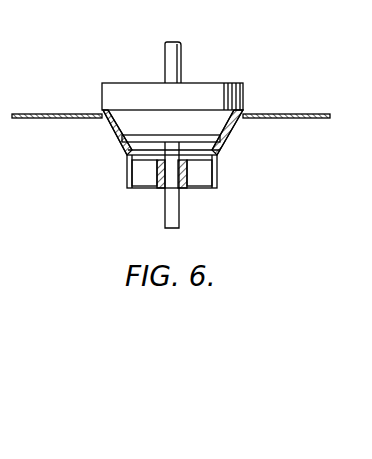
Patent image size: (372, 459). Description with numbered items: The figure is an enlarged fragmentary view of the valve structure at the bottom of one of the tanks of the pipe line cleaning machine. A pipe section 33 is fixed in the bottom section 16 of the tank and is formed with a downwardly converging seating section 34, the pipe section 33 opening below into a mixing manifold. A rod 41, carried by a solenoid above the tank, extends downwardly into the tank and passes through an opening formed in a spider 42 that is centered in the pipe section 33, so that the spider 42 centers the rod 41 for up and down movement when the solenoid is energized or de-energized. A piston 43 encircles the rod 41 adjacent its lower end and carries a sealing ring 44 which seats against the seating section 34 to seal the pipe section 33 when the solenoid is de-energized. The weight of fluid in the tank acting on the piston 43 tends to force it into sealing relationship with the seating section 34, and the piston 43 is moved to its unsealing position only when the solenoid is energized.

The bottom section 16 is at (296, 114).
The pipe section 33 is at (218, 173).
The seating section 34 is at (237, 127).
The rod 41 is at (176, 60).
The spider 42 is at (188, 180).
The piston 43 is at (148, 90).
The sealing ring 44 is at (123, 138).